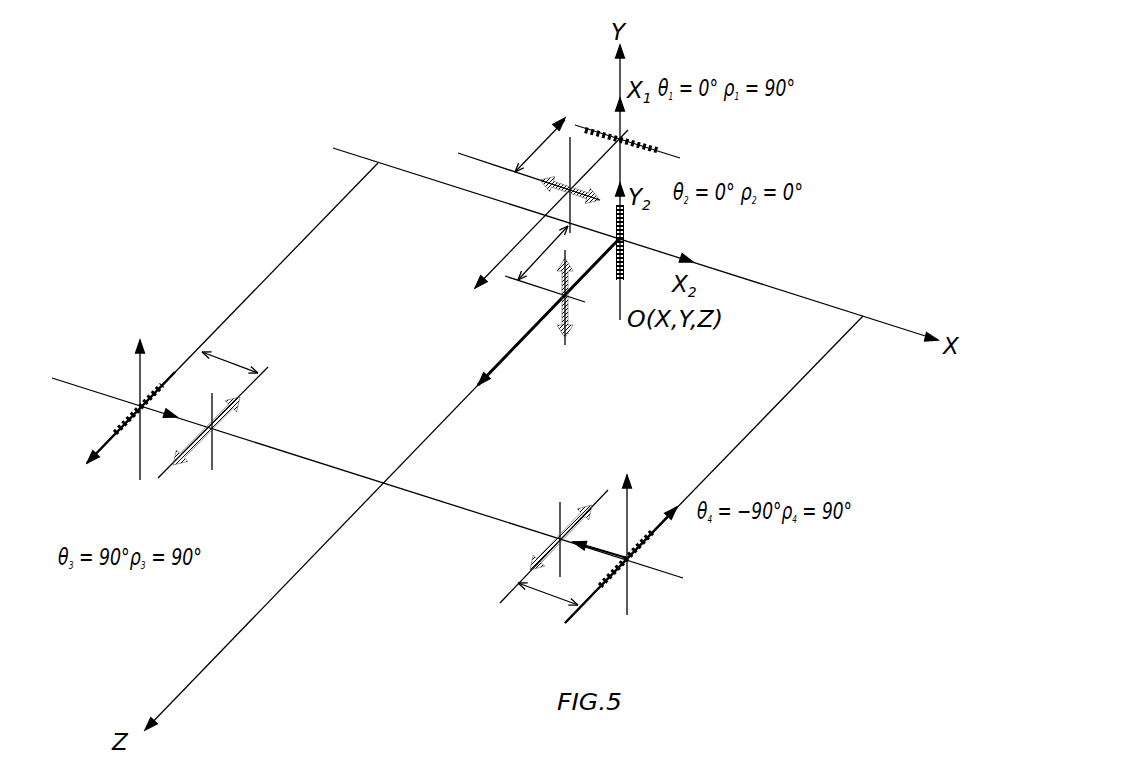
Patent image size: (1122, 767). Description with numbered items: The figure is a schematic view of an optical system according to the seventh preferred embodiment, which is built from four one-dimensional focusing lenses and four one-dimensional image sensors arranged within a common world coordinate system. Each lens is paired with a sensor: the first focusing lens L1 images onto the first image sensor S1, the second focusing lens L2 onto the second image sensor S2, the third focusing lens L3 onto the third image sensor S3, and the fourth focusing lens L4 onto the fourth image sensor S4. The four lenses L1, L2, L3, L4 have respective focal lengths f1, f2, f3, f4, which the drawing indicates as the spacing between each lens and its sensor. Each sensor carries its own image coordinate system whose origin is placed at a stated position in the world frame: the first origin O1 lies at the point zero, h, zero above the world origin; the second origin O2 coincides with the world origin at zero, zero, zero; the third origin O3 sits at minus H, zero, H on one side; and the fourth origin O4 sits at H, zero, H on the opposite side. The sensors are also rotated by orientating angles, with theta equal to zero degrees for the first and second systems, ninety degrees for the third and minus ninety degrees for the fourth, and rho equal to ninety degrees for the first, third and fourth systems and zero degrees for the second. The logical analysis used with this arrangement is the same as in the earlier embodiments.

The 1D image sensor S1 is at (600, 130).
The 1D image sensor S2 is at (617, 260).
The 1D image sensor S3 is at (158, 383).
The 1D image sensor S4 is at (613, 582).
The 1D focusing lens L1 is at (538, 188).
The 1D focusing lens L2 is at (563, 342).
The 1D focusing lens L3 is at (227, 422).
The 1D focusing lens L4 is at (510, 546).
The focal length f1 is at (540, 131).
The focal length f2 is at (543, 253).
The focal length f3 is at (230, 356).
The focal length f4 is at (548, 603).
The origin of image coordinate system O1 is at (625, 133).
The origin of image coordinate system O2 is at (626, 237).
The origin of image coordinate system O3 is at (138, 412).
The origin of image coordinate system O4 is at (638, 558).